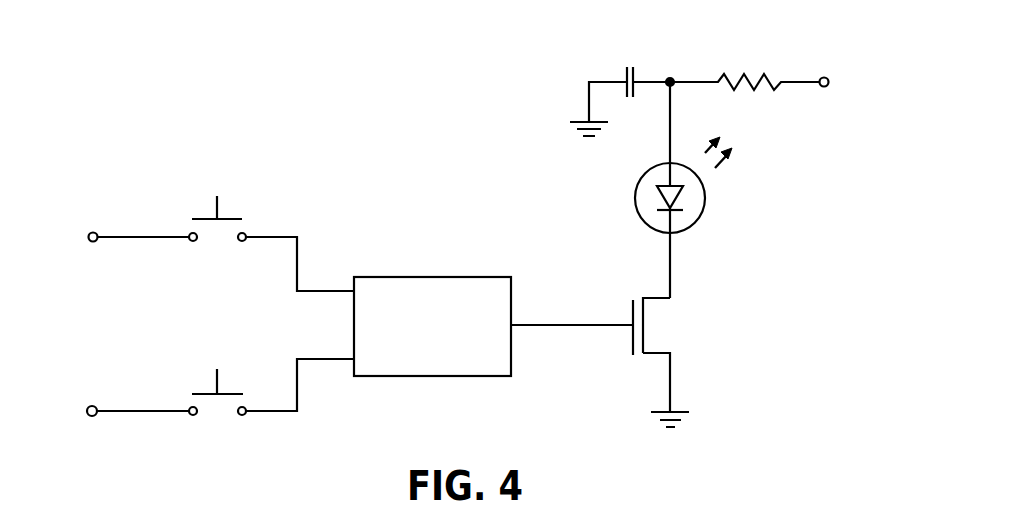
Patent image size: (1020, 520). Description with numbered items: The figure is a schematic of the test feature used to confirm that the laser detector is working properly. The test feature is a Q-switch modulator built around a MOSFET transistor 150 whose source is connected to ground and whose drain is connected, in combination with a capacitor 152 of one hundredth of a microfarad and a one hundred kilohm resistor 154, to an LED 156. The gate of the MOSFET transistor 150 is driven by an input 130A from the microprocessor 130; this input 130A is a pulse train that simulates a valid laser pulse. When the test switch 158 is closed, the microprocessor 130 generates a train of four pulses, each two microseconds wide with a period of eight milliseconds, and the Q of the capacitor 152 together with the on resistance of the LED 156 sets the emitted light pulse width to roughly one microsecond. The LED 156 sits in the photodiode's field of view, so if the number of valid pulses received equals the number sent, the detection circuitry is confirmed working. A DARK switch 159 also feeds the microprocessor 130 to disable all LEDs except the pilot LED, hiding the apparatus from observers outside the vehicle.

The microprocessor 130 is at (457, 340).
The input 130A is at (572, 309).
The MOSFET transistor 150 is at (672, 362).
The capacitor 152 is at (620, 88).
The resistor 154 is at (781, 72).
The LED 156 is at (697, 188).
The test switch 158 is at (198, 227).
The DARK switch 159 is at (220, 393).